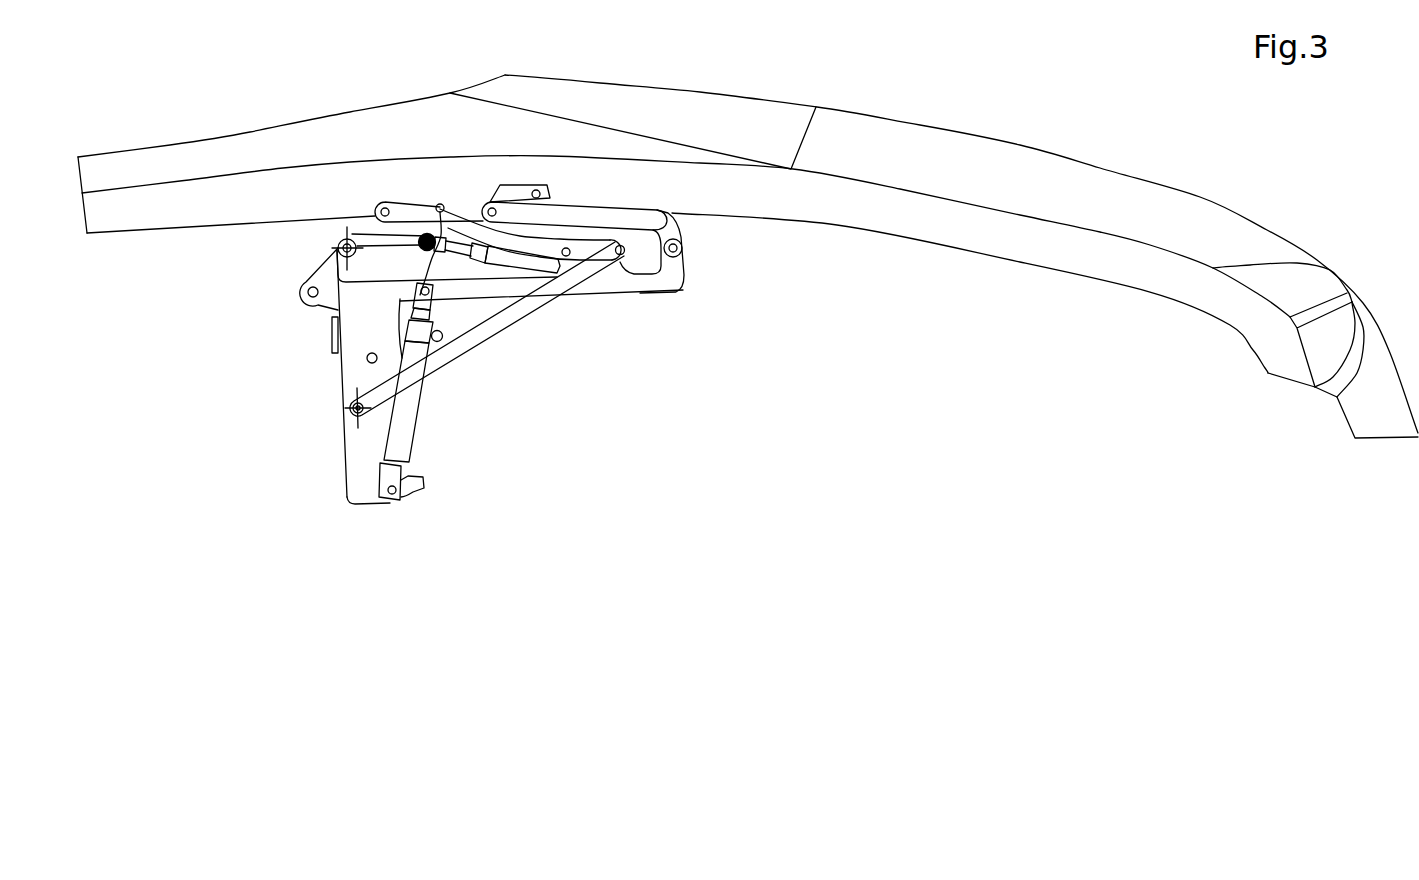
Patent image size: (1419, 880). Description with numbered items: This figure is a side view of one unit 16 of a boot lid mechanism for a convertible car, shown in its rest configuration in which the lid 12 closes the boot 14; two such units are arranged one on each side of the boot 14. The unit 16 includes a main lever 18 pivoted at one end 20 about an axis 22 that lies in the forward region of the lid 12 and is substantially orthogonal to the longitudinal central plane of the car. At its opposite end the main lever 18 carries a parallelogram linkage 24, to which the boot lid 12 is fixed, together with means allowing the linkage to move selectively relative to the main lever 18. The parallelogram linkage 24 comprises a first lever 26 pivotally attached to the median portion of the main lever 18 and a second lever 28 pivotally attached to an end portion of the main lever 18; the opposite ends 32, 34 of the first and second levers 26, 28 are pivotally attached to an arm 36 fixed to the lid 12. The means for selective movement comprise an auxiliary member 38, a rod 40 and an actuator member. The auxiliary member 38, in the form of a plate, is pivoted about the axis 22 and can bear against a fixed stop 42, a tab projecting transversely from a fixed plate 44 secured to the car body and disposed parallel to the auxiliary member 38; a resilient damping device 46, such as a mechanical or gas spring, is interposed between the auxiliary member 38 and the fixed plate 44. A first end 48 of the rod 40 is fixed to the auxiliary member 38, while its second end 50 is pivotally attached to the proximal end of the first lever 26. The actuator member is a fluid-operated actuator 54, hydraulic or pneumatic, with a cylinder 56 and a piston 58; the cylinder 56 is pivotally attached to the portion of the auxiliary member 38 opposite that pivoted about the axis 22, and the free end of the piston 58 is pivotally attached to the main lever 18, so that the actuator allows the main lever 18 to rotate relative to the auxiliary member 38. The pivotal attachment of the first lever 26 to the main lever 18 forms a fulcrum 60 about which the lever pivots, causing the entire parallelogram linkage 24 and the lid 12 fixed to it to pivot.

The lid 12 is at (792, 95).
The boot 14 is at (861, 398).
The unit 16 is at (338, 458).
The main lever 18 is at (602, 304).
The end 20 is at (338, 280).
The axis 22 is at (336, 247).
The parallelogram linkage 24 is at (698, 229).
The first lever 26 is at (468, 208).
The second lever 28 is at (582, 205).
The opposite end 32 is at (375, 215).
The opposite end 34 is at (490, 188).
The arm 36 is at (439, 194).
The auxiliary member 38 is at (331, 377).
The rod 40 is at (486, 365).
The fixed stop 42 is at (332, 338).
The fixed plate 44 is at (302, 272).
The resilient damping device 46 is at (436, 205).
The first end 48 is at (354, 416).
The second end 50 is at (623, 262).
The fluid-operated actuator 54 is at (434, 398).
The cylinder 56 is at (412, 440).
The piston 58 is at (403, 298).
The fulcrum 60 is at (567, 256).